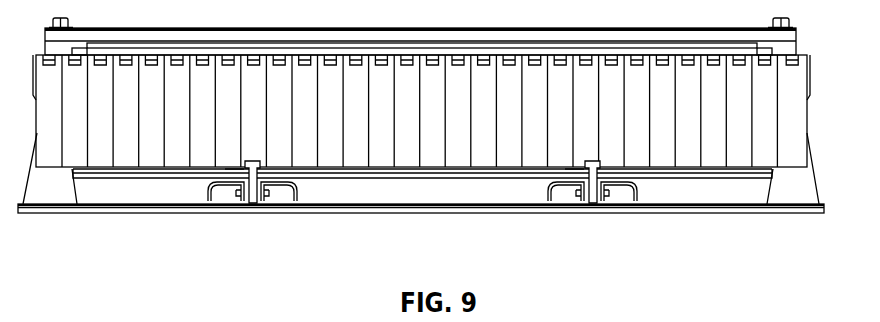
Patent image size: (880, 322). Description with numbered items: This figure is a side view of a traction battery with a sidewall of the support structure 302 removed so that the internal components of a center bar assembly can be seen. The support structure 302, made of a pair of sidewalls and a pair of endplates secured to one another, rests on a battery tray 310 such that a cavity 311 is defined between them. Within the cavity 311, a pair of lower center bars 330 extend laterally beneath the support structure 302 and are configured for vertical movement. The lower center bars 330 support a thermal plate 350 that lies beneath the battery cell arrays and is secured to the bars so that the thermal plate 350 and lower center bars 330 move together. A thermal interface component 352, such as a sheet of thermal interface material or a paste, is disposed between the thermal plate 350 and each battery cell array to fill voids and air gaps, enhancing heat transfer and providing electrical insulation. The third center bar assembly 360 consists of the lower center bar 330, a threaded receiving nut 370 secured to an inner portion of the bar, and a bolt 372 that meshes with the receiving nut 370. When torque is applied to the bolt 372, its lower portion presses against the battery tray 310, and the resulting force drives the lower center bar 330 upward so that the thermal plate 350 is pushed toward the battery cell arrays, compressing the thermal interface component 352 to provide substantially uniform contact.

The support structure 302 is at (812, 62).
The cavity 311 is at (112, 193).
The battery tray 310 is at (318, 210).
The thermal plate 350 is at (374, 175).
The thermal interface component 352 is at (448, 169).
The third center bar assembly 360 is at (230, 174).
The receiving nut 370 is at (233, 188).
The bolt 372 is at (252, 185).
The lower center bar 330 is at (277, 190).